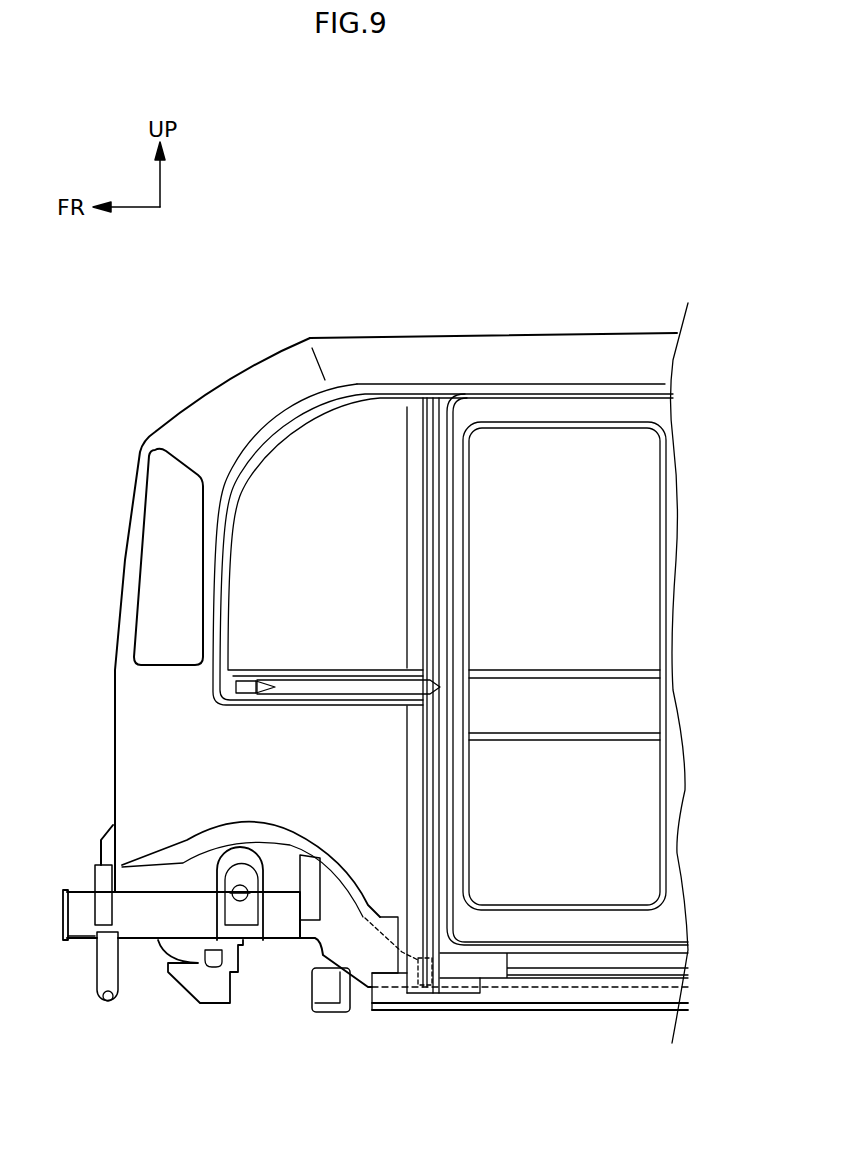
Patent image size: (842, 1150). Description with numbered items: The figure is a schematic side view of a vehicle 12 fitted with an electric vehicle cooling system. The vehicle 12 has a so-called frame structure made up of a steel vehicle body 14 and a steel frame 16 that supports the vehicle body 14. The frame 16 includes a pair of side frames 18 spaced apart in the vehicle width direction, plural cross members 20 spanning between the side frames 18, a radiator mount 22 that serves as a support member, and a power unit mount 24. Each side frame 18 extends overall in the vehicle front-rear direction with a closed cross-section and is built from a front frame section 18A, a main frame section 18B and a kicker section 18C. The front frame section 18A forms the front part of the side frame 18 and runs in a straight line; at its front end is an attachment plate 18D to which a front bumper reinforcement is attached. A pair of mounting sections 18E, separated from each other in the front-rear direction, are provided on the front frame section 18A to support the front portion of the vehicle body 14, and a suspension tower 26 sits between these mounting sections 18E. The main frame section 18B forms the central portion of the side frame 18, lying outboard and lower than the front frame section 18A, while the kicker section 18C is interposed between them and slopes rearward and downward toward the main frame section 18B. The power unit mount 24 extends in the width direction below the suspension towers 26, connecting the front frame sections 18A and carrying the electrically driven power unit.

The vehicle 12 is at (583, 249).
The vehicle body 14 is at (590, 333).
The frame 16 is at (177, 1030).
The side frame 18 is at (73, 890).
The front frame section 18A is at (80, 932).
The main frame section 18B is at (580, 987).
The kicker section 18C is at (365, 960).
The attachment plate 18D is at (62, 913).
The mounting section 18E is at (103, 906).
The cross member 20 is at (328, 988).
The radiator mount 22 is at (108, 963).
The power unit mount 24 is at (215, 992).
The suspension tower 26 is at (240, 860).